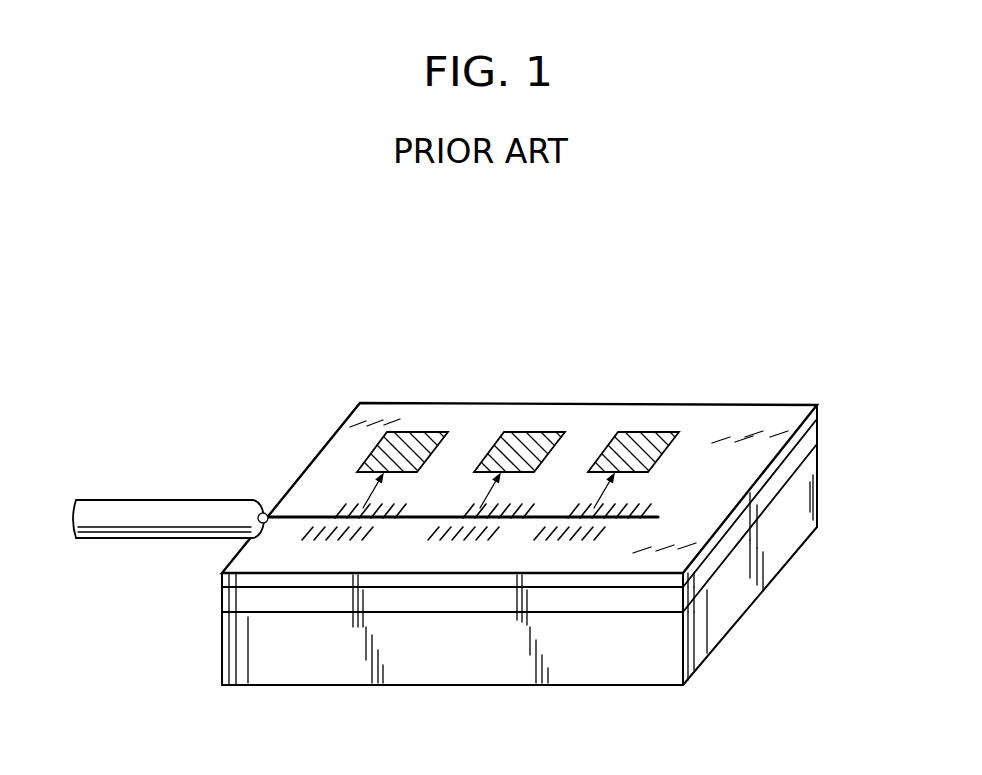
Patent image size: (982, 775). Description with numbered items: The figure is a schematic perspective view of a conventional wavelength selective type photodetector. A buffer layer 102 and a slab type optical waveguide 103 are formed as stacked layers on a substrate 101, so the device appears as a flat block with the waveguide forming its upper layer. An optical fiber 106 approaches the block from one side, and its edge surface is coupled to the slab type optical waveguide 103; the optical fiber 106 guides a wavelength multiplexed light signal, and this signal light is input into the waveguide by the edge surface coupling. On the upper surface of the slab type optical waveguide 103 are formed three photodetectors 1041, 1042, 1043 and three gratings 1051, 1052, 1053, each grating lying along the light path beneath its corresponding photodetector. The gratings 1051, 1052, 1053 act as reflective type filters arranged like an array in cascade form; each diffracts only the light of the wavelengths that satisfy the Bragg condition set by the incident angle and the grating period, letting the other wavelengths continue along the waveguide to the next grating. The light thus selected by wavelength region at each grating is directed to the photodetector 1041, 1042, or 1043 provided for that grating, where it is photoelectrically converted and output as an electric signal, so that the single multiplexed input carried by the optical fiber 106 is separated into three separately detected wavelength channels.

The substrate 101 is at (820, 497).
The buffer layer 102 is at (808, 445).
The slab type optical waveguide 103 is at (818, 410).
The photodetector 1041 is at (422, 435).
The photodetector 1042 is at (538, 435).
The photodetector 1043 is at (653, 435).
The grating 1051 is at (328, 552).
The grating 1052 is at (467, 552).
The grating 1053 is at (597, 550).
The optical fiber 106 is at (175, 500).